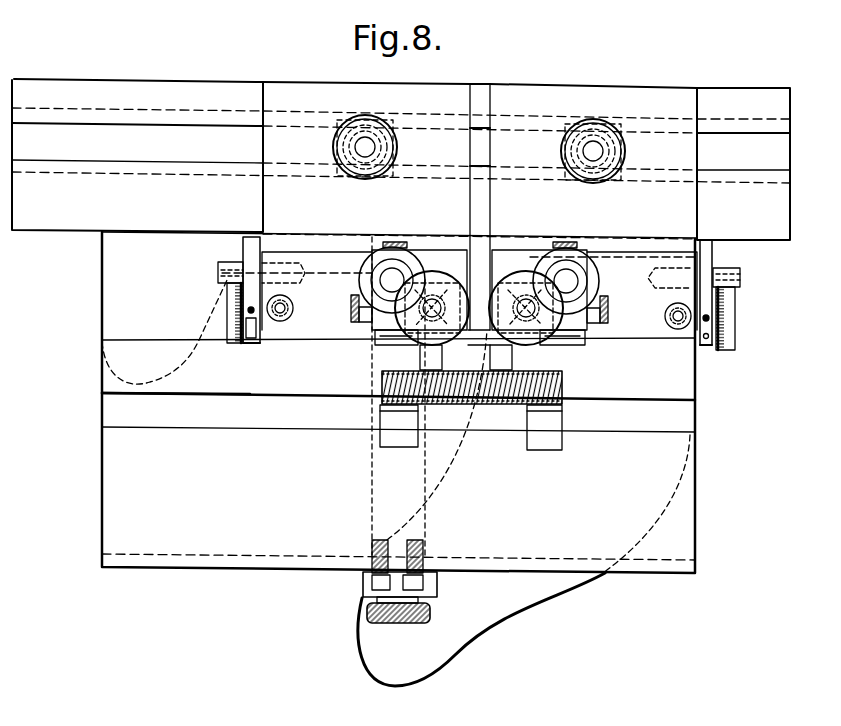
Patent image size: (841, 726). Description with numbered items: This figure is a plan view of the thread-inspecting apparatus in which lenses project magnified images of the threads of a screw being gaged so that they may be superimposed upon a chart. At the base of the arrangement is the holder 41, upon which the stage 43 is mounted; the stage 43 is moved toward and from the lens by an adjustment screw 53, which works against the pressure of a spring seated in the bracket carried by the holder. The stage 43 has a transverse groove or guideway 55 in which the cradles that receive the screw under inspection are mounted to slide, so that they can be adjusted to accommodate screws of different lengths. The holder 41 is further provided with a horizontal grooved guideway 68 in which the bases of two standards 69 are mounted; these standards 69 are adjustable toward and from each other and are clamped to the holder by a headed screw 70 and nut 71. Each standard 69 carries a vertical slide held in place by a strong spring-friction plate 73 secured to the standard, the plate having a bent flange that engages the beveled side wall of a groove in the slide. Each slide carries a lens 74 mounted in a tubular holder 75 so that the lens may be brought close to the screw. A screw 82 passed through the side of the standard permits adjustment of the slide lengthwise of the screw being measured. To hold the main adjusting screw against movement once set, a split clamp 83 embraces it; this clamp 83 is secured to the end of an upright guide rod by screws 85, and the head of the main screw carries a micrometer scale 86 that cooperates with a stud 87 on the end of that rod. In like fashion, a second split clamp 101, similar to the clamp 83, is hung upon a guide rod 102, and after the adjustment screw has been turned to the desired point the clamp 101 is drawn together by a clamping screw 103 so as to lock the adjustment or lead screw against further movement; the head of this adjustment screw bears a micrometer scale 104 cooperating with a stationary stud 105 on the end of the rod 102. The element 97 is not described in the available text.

The holder 41 is at (553, 600).
The stage 43 is at (696, 499).
The adjustment screw 53 is at (366, 612).
The transverse groove or guideway 55 is at (104, 410).
The horizontal grooved guideway 68 is at (708, 88).
The standard 69 is at (302, 84).
The headed screw 70 is at (340, 150).
The nut 71 is at (397, 147).
The spring-friction plate 73 is at (392, 345).
The lens 74 is at (456, 350).
The tubular holder 75 is at (456, 334).
The screw 82 is at (351, 311).
The split clamp 83 is at (364, 248).
The screws 85 is at (418, 252).
The micrometer scale 86 is at (395, 352).
The stud 87 is at (372, 282).
The pivot screw 97 is at (281, 322).
The split clamp 101 is at (248, 238).
The guide rod 102 is at (282, 270).
The clamping screw 103 is at (247, 343).
The micrometer scale 104 is at (222, 296).
The stationary stud 105 is at (222, 264).